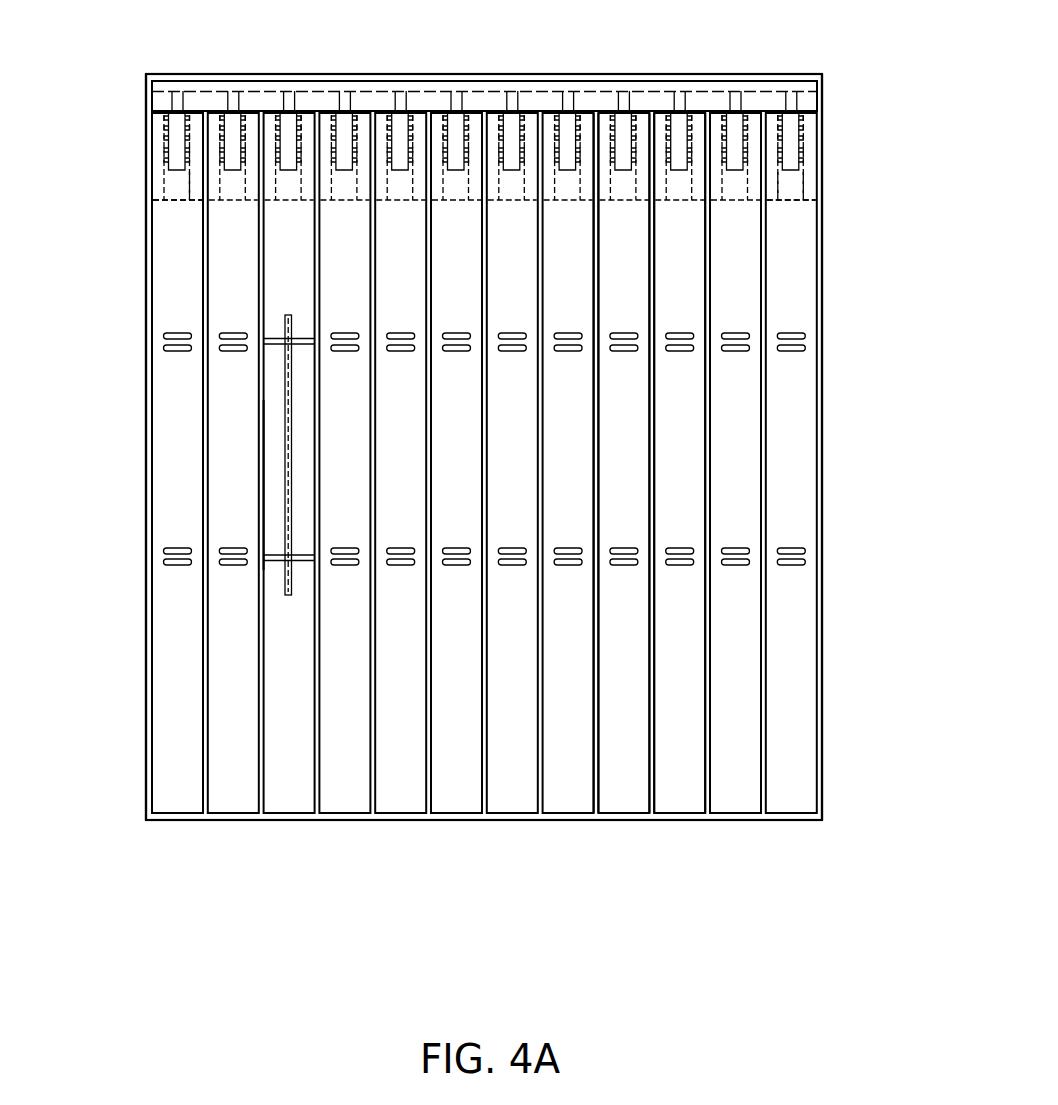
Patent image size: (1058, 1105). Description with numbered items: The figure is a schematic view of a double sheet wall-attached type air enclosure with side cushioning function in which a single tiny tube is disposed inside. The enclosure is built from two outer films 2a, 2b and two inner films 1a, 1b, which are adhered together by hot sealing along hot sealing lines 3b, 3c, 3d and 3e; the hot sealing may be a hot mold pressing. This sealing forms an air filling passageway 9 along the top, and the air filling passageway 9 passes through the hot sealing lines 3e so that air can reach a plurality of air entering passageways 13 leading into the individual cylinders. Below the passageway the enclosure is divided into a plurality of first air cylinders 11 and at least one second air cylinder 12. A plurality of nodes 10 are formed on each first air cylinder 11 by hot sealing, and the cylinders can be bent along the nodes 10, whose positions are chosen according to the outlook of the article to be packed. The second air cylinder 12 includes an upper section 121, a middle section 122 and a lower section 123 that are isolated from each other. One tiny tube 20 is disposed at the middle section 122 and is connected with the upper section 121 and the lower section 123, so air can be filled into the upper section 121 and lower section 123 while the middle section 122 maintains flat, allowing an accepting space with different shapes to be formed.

The air filling passageway 9 is at (512, 82).
The inner film 1a is at (165, 148).
The inner film 1b is at (193, 184).
The outer film 2a is at (811, 147).
The outer film 2b is at (807, 440).
The air entering passageway 13 is at (792, 187).
The hot sealing line 3b is at (790, 823).
The hot sealing line 3c is at (147, 592).
The hot sealing line 3d is at (821, 264).
The hot sealing line 3e is at (597, 808).
The node 10 is at (793, 333).
The first air cylinder 11 is at (177, 806).
The second air cylinder 12 is at (289, 806).
The tiny tube 20 is at (287, 406).
The upper section 121 is at (287, 282).
The middle section 122 is at (273, 484).
The lower section 123 is at (288, 638).